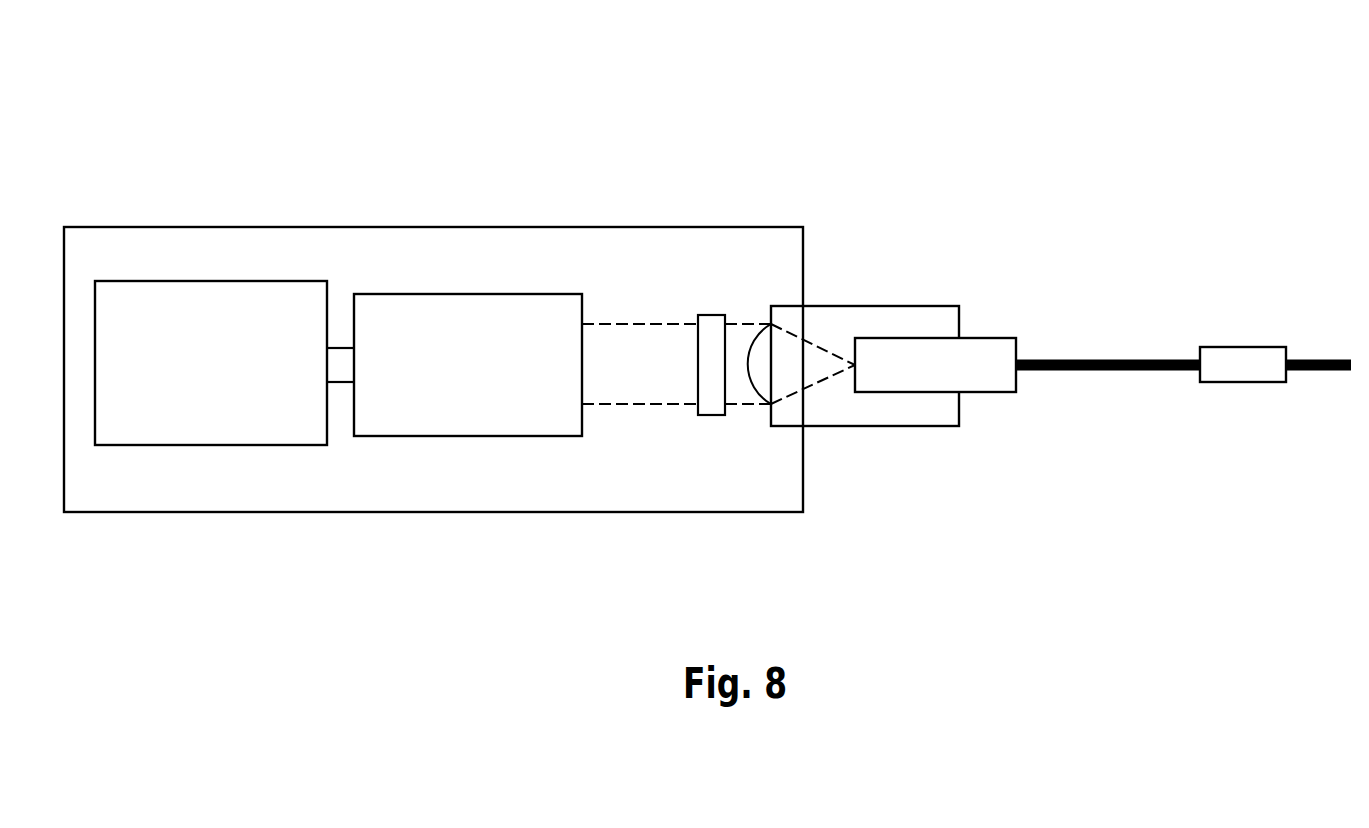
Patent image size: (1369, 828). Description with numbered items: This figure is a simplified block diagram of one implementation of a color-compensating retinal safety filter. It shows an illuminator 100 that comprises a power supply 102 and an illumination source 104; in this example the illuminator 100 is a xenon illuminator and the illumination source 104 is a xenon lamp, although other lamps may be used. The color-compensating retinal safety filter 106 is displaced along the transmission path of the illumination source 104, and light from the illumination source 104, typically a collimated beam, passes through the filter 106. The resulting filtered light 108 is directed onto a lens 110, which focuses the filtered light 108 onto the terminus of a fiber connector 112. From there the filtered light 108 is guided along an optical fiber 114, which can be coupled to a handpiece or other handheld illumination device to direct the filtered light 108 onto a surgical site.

The illuminator 100 is at (1030, 153).
The power supply 102 is at (233, 281).
The illumination source 104 is at (503, 294).
The color-compensating retinal safety filter 106 is at (707, 315).
The filtered light 108 is at (740, 338).
The lens 110 is at (763, 376).
The fiber connector 112 is at (917, 393).
The optical fiber 114 is at (1116, 370).